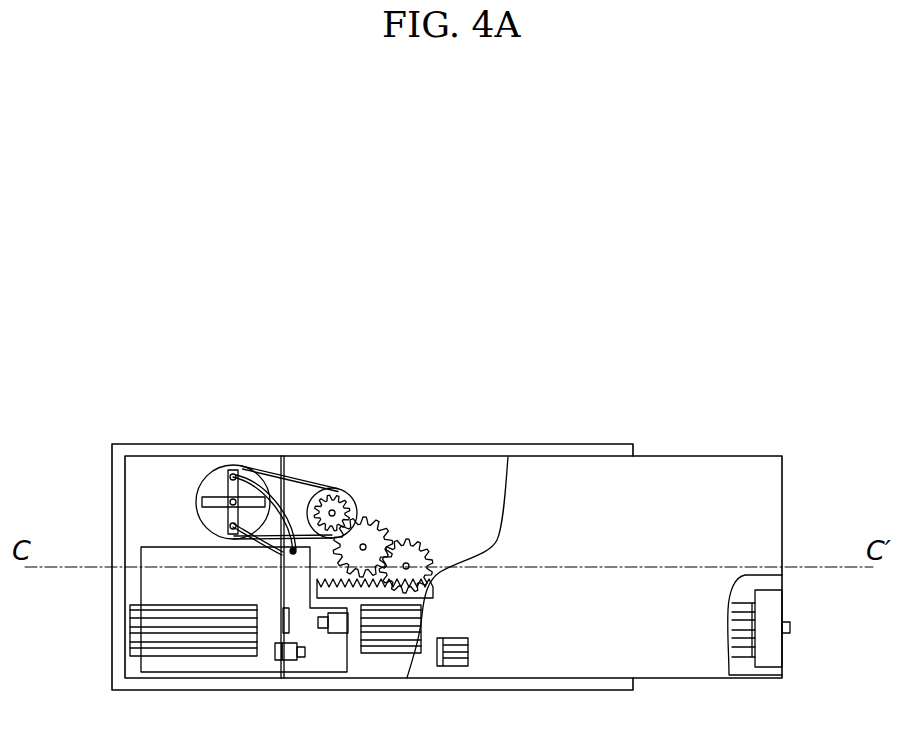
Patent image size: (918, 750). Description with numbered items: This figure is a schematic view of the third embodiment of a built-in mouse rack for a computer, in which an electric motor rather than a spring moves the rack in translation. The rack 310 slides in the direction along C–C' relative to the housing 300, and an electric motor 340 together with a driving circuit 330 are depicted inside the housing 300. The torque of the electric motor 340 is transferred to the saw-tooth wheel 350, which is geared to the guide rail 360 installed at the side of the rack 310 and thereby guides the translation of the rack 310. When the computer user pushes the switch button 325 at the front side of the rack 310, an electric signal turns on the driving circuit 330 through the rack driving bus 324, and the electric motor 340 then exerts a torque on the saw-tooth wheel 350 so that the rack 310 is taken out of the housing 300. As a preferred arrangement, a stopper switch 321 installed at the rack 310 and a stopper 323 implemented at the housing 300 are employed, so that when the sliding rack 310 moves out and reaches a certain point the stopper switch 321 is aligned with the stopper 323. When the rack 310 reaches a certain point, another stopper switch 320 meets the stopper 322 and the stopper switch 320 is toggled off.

The housing 300 is at (248, 450).
The rack 310 is at (693, 473).
The stopper switch 320 is at (337, 626).
The stopper switch 321 is at (295, 655).
The stopper 322 is at (283, 622).
The stopper 323 is at (453, 645).
The rack driving bus 324 is at (210, 642).
The switch button 325 is at (770, 645).
The driving circuit 330 is at (150, 583).
The electric motor 340 is at (205, 512).
The saw-tooth wheel 350 is at (366, 520).
The guide rail 360 is at (412, 563).